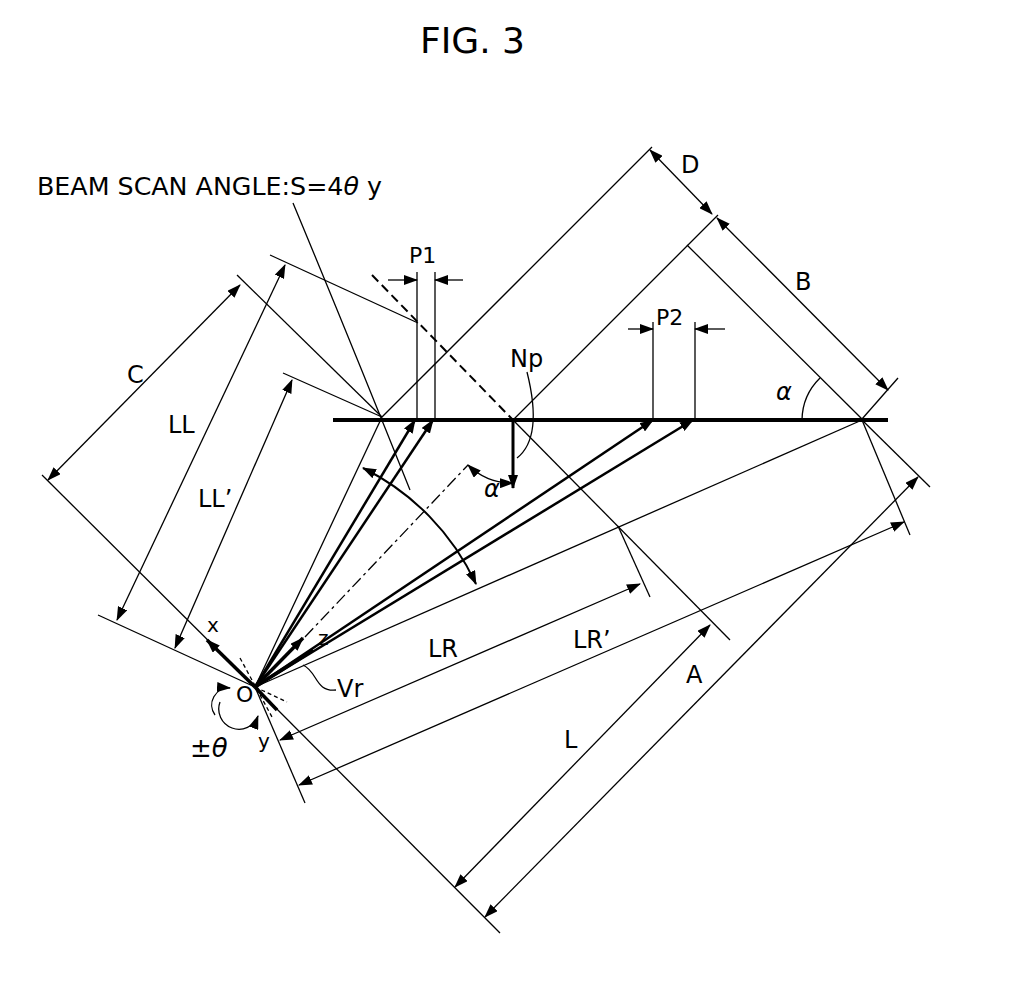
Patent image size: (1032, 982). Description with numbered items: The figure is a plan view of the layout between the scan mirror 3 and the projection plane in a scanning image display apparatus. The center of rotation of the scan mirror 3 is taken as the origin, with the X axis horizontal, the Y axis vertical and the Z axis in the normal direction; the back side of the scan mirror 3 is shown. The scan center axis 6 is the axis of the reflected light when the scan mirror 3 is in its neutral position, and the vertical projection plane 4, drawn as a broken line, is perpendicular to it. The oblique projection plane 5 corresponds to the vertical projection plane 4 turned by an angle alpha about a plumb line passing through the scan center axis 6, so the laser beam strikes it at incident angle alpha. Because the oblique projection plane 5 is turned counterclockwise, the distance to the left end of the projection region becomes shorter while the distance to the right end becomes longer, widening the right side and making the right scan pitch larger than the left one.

The scan mirror 3 is at (217, 713).
The vertical projection plane 4 is at (378, 282).
The oblique projection plane 5 is at (722, 420).
The scan center axis 6 is at (358, 583).